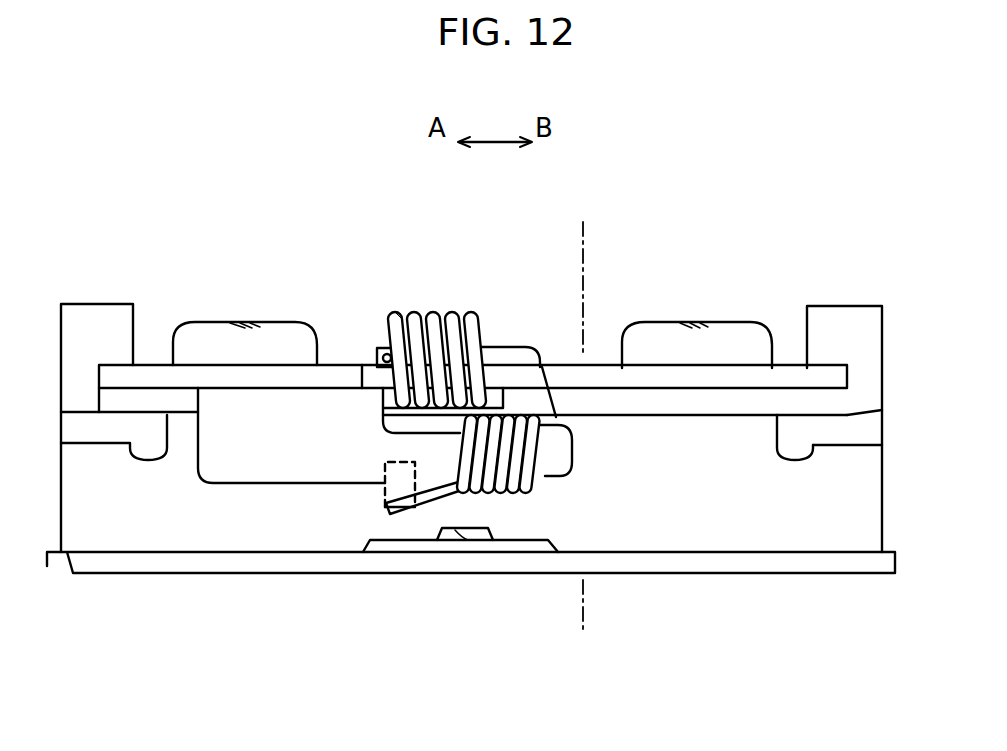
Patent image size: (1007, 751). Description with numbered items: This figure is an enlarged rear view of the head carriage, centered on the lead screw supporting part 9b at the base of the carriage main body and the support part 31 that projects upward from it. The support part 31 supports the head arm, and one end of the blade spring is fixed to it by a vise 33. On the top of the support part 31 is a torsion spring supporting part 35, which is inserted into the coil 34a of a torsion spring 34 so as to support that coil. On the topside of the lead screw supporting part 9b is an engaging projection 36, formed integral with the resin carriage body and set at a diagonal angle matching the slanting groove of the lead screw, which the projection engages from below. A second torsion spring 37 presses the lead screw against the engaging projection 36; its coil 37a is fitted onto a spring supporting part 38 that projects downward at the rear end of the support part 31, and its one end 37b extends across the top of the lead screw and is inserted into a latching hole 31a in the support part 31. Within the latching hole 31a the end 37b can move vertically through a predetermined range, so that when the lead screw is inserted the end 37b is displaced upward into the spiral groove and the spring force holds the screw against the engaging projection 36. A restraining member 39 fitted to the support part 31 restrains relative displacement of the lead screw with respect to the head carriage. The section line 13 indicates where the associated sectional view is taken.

The lead screw supporting part 9b is at (670, 553).
The section line 13— 13 is at (635, 262).
The support part 31 is at (645, 405).
The latching hole 31a is at (387, 510).
The vise 33 is at (205, 330).
The torsion spring 34 is at (446, 300).
The coil 34a is at (408, 313).
The torsion spring supporting part 35 is at (497, 353).
The engaging projection 36 is at (480, 533).
The torsion spring 37 is at (523, 500).
The coil 37a is at (557, 472).
The end 37b is at (407, 515).
The spring supporting part 38 is at (347, 463).
The restraining member 39 is at (335, 372).